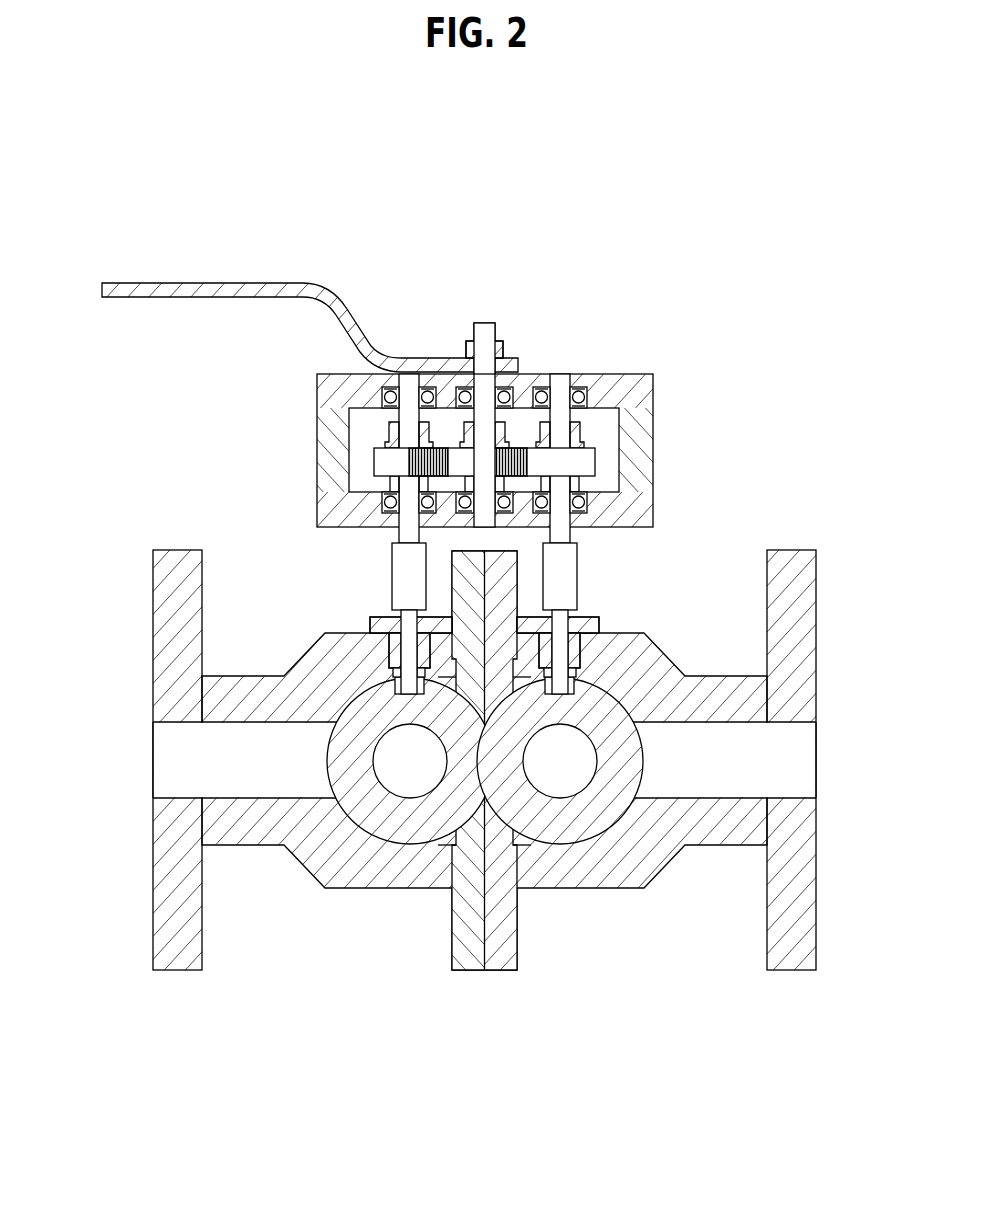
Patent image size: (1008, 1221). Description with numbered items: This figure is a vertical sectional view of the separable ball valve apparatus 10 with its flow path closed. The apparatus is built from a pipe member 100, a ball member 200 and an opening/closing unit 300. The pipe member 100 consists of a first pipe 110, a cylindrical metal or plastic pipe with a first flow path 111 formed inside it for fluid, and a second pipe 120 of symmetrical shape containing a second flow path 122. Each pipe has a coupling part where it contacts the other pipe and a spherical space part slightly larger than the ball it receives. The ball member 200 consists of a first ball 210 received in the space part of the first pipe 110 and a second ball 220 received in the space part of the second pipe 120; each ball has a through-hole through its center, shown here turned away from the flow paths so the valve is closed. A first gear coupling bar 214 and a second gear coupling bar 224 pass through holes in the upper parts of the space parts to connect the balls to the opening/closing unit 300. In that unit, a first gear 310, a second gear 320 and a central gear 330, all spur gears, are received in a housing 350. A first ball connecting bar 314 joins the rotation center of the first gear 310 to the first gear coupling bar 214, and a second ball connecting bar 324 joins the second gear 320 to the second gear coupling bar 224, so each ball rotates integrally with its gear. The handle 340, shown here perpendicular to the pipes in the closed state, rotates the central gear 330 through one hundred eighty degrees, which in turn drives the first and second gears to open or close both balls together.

The separable ball valve apparatus 10 is at (103, 151).
The pipe member 100 is at (479, 800).
The first pipe 110 is at (162, 592).
The first flow path 111 is at (198, 772).
The second pipe 120 is at (805, 615).
The second flow path 122 is at (779, 772).
The ball member 200 is at (486, 784).
The first ball 210 is at (403, 833).
The first gear coupling bar 214 is at (407, 628).
The second ball 220 is at (580, 822).
The second gear coupling bar 224 is at (562, 628).
The opening/closing unit 300 is at (436, 441).
The first gear 310 is at (379, 462).
The first ball connecting bar 314 is at (400, 533).
The second gear 320 is at (580, 456).
The second ball connecting bar 324 is at (570, 533).
The central gear 330 is at (466, 456).
The handle 340 is at (200, 290).
The housing 350 is at (653, 388).